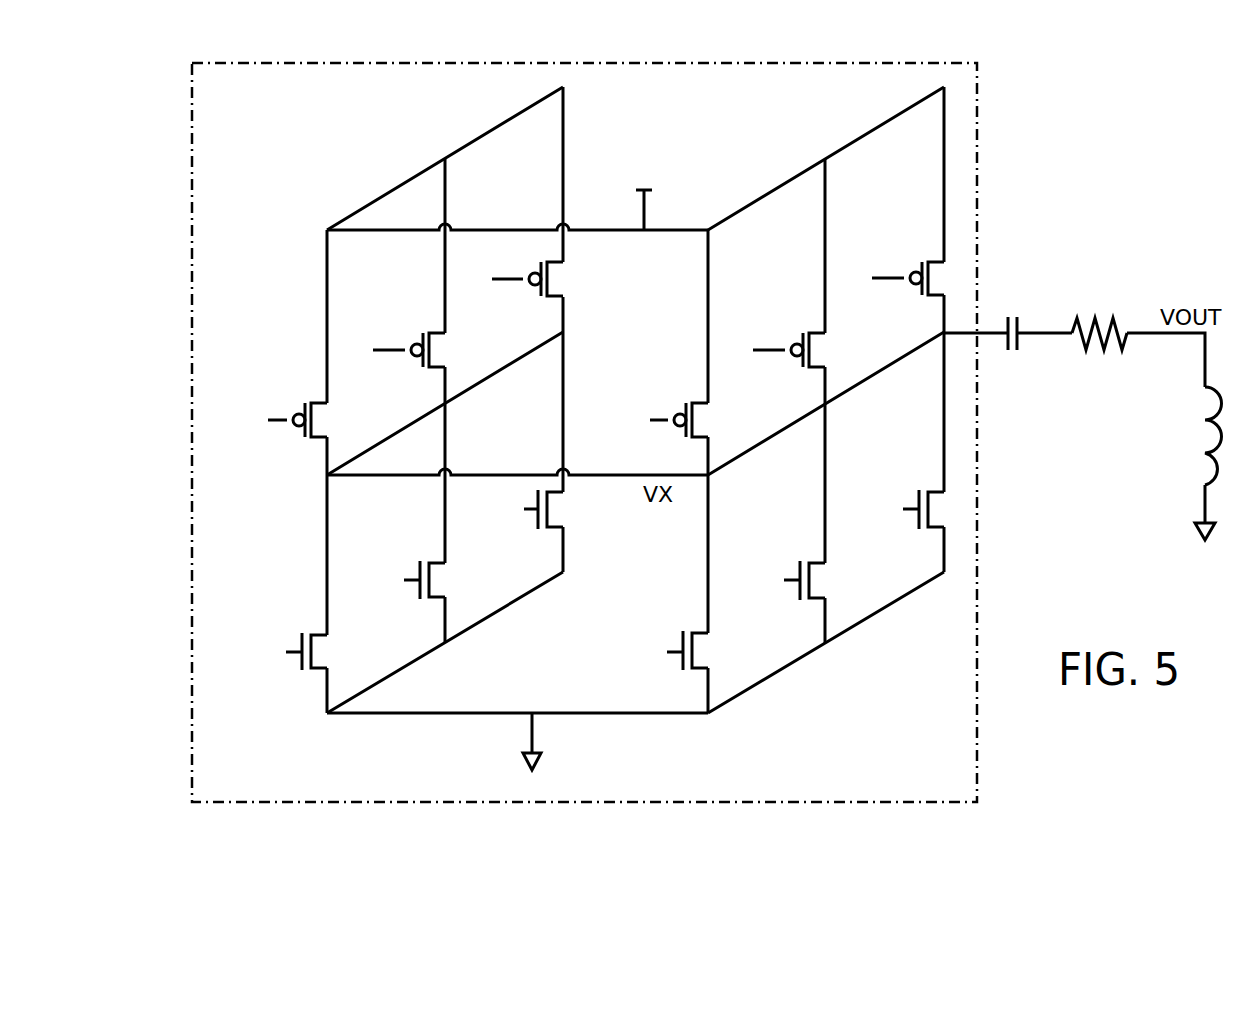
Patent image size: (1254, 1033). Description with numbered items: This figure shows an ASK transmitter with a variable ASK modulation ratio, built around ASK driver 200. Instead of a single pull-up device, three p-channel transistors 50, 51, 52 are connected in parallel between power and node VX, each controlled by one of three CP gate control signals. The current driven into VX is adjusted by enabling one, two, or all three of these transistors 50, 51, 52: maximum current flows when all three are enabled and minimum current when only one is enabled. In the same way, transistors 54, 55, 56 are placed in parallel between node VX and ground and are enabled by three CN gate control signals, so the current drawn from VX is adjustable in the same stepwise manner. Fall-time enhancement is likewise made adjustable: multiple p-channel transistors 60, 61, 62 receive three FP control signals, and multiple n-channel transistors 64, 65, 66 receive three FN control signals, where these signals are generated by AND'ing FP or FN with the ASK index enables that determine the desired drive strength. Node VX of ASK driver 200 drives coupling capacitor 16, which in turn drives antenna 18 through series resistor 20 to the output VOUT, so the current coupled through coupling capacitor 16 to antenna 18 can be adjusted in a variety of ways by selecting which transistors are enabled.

The ASK driver 200 is at (264, 767).
The p-channel transistor 50 is at (333, 423).
The p-channel transistor 51 is at (437, 352).
The p-channel transistor 52 is at (555, 280).
The transistor 54 is at (363, 652).
The transistor 55 is at (480, 580).
The transistor 56 is at (598, 510).
The p-channel transistor 60 is at (714, 423).
The p-channel transistor 61 is at (817, 352).
The p-channel transistor 62 is at (928, 263).
The n-channel transistor 64 is at (744, 652).
The n-channel transistor 65 is at (860, 580).
The n-channel transistor 66 is at (928, 492).
The coupling capacitor 16 is at (1019, 312).
The series resistor 20 is at (1104, 321).
The antenna 18 is at (1208, 425).